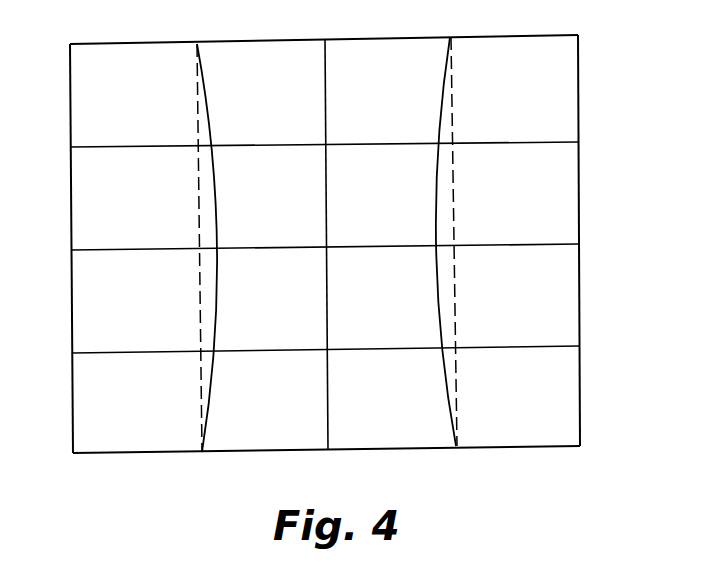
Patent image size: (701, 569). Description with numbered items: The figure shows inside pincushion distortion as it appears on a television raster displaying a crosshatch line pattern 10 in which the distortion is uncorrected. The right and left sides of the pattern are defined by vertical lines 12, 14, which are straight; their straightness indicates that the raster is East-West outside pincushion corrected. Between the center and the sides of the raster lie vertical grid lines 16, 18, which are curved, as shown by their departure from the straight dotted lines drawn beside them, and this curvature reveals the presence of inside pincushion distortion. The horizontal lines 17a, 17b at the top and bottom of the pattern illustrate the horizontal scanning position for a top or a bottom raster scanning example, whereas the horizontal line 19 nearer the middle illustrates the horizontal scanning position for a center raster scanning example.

The crosshatch line pattern 10 is at (322, 245).
The vertical line 12 is at (580, 299).
The vertical line 14 is at (71, 302).
The vertical grid line 16 is at (440, 88).
The horizontal line 17a is at (518, 34).
The horizontal line 17b is at (523, 447).
The vertical grid line 18 is at (209, 98).
The horizontal line 19 is at (515, 244).